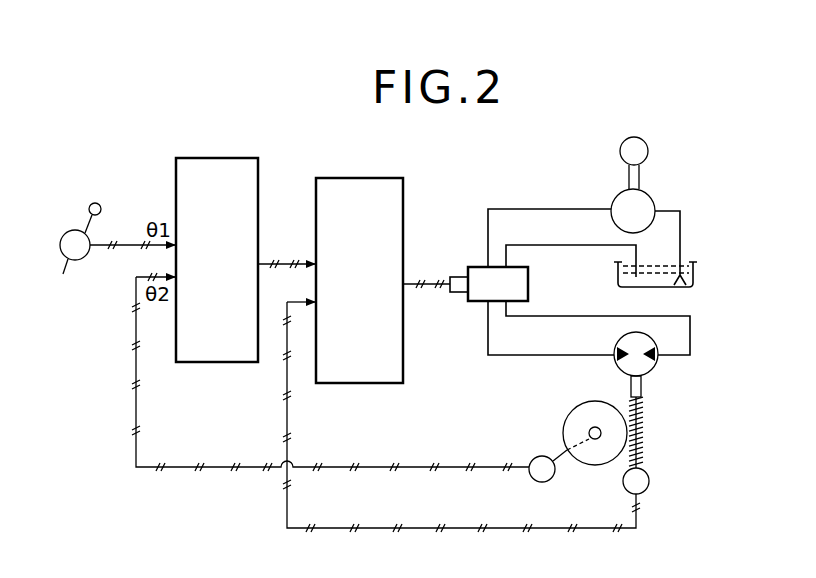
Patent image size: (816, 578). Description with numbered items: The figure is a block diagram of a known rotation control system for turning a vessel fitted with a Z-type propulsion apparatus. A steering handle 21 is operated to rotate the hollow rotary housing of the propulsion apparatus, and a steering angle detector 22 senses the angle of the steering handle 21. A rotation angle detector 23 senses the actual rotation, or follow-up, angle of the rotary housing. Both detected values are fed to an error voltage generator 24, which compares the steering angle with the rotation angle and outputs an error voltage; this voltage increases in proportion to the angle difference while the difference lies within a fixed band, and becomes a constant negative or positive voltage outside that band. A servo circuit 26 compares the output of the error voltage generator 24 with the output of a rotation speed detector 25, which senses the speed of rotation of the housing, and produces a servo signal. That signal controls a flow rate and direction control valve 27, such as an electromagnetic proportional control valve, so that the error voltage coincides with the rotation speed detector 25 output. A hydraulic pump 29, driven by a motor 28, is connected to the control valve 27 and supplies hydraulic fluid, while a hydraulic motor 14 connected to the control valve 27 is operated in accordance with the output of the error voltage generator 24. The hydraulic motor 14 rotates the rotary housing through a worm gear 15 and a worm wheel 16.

The hydraulic motor 14 is at (654, 371).
The worm gear 15 is at (643, 427).
The worm wheel 16 is at (573, 411).
The steering handle 21 is at (87, 225).
The steering angle detector 22 is at (62, 279).
The rotation angle detector 23 is at (532, 457).
The error voltage generator 24 is at (259, 184).
The rotation speed detector 25 is at (649, 481).
The servo circuit 26 is at (404, 207).
The flow rate and direction control valve 27 is at (477, 267).
The motor 28 is at (646, 149).
The hydraulic pump 29 is at (651, 199).